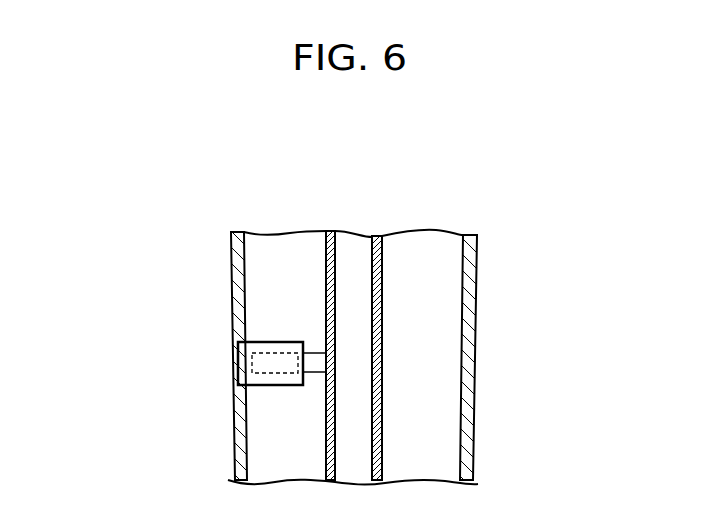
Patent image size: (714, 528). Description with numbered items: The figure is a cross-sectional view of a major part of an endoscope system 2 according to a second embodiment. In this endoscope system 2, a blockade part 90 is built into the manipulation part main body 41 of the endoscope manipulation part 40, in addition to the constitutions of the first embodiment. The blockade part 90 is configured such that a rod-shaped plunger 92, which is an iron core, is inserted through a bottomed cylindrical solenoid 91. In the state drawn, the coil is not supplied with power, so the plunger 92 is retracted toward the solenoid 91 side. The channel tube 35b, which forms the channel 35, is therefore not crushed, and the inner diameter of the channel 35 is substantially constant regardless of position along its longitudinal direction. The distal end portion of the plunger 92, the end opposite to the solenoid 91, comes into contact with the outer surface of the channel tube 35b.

The endoscope system 2 is at (212, 181).
The endoscope manipulation part 40 is at (222, 245).
The manipulation part main body 41 is at (470, 284).
The channel 35 is at (367, 237).
The channel tube 35b is at (327, 233).
The blockade part 90 is at (157, 300).
The solenoid 91 is at (260, 345).
The plunger 92 is at (317, 368).